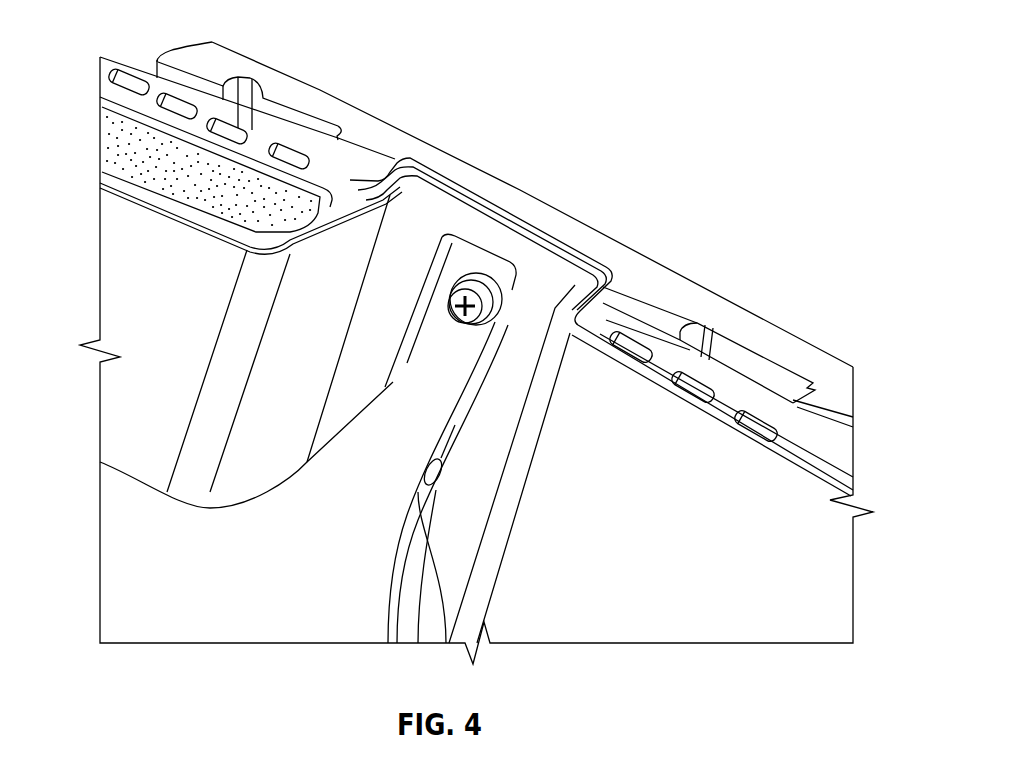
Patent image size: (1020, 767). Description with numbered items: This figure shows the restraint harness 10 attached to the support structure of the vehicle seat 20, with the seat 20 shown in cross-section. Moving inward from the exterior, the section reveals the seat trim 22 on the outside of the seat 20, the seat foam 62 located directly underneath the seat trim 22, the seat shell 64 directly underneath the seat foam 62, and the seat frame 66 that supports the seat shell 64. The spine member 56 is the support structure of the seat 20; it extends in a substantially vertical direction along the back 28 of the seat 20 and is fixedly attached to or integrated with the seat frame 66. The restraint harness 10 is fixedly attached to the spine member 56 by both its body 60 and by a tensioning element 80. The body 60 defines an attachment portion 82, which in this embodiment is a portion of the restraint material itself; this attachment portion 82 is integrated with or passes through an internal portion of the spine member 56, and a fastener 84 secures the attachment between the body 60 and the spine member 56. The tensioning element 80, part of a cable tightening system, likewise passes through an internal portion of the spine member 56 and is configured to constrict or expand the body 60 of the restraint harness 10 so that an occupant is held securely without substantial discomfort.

The restraint harness 10 is at (128, 474).
The seat 20 is at (806, 327).
The seat trim 22 is at (125, 302).
The back 28 is at (642, 418).
The spine member 56 is at (473, 210).
The body 60 is at (268, 578).
The seat foam 62 is at (100, 130).
The seat shell 64 is at (110, 75).
The seat frame 66 is at (203, 51).
The tensioning element 80 is at (432, 585).
The attachment portion 82 is at (455, 357).
The fastener 84 is at (453, 312).